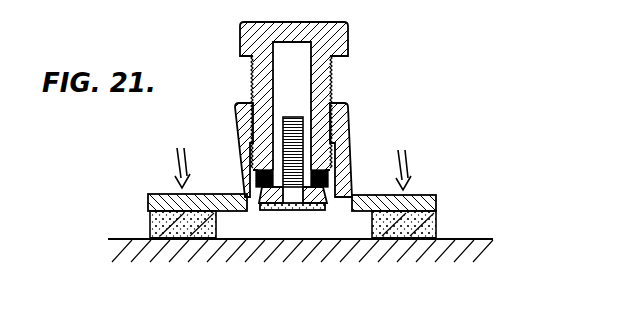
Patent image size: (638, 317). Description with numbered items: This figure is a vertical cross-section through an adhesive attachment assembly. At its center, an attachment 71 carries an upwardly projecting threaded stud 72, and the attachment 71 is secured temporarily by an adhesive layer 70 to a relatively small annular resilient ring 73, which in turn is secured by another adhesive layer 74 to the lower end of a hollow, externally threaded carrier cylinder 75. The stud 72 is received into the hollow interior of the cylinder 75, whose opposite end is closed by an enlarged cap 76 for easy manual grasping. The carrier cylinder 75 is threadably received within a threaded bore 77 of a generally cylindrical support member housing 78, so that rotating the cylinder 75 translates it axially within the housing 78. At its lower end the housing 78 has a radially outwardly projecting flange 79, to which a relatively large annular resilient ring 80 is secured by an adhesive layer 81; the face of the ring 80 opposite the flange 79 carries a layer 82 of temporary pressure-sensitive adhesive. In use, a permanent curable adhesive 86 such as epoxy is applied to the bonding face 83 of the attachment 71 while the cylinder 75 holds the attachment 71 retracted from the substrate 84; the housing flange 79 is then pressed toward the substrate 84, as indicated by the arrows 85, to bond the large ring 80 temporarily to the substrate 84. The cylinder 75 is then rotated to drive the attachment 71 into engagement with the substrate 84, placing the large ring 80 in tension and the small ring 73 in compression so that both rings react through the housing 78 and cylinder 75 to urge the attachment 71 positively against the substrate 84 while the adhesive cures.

The adhesive layer 70 is at (258, 200).
The attachment 71 is at (342, 180).
The threaded stud 72 is at (301, 130).
The annular resilient ring 73 is at (256, 190).
The adhesive layer 74 is at (251, 165).
The carrier cylinder 75 is at (329, 82).
The cap 76 is at (340, 38).
The threaded bore 77 is at (254, 100).
The support member housing 78 is at (238, 120).
The flange 79 is at (148, 201).
The annular resilient ring 80 is at (436, 222).
The adhesive layer 81 is at (430, 196).
The layer of temporary adhesive 82 is at (437, 232).
The bonding face 83 is at (297, 212).
The substrate 84 is at (371, 247).
The arrows 85 is at (176, 159).
The permanent curable adhesive 86 is at (266, 212).